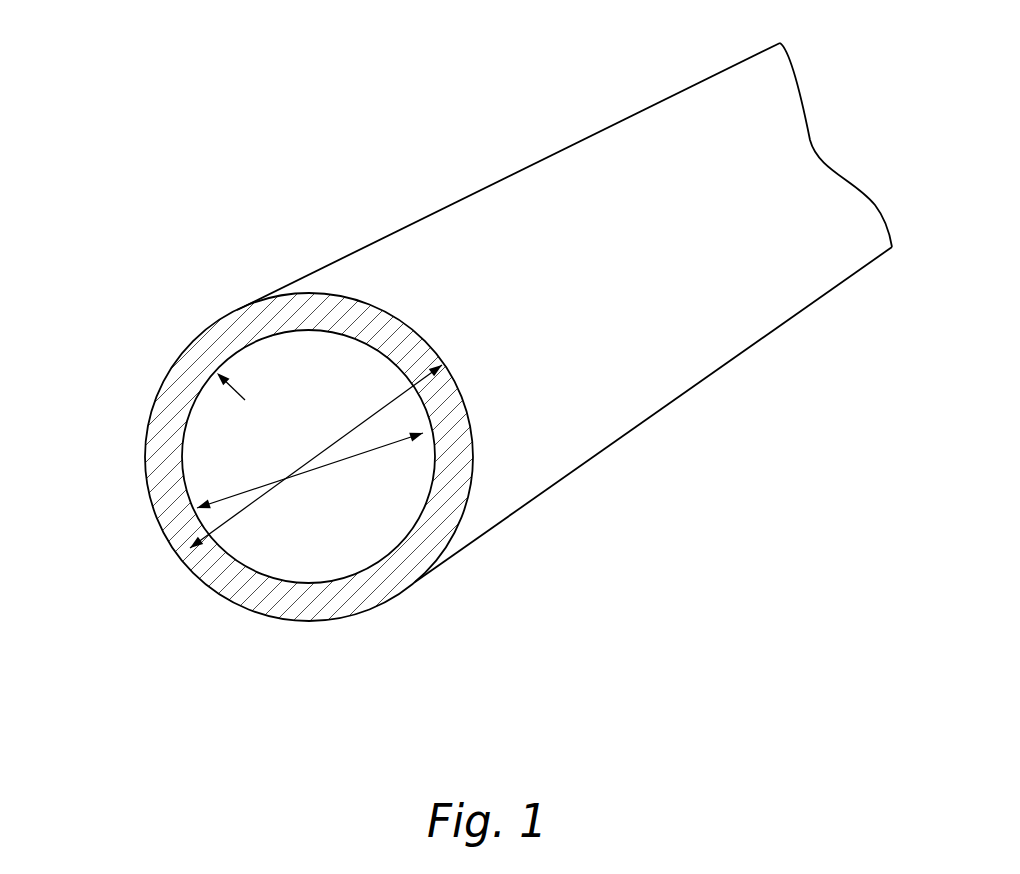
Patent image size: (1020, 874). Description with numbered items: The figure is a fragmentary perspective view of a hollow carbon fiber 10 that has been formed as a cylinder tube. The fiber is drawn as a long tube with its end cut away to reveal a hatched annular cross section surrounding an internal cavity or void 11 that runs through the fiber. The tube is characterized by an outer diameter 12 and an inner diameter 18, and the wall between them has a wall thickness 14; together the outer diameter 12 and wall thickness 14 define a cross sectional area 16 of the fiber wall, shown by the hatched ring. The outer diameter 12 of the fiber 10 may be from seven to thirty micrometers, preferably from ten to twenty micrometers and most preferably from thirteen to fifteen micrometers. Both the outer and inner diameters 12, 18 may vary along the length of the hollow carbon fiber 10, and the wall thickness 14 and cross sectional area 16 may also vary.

The hollow carbon fiber 10 is at (360, 110).
The internal cavity 11 is at (309, 395).
The outer diameter 12 is at (237, 498).
The wall thickness 14 is at (180, 343).
The cross sectional area 16 is at (172, 490).
The inner diameter 18 is at (318, 477).